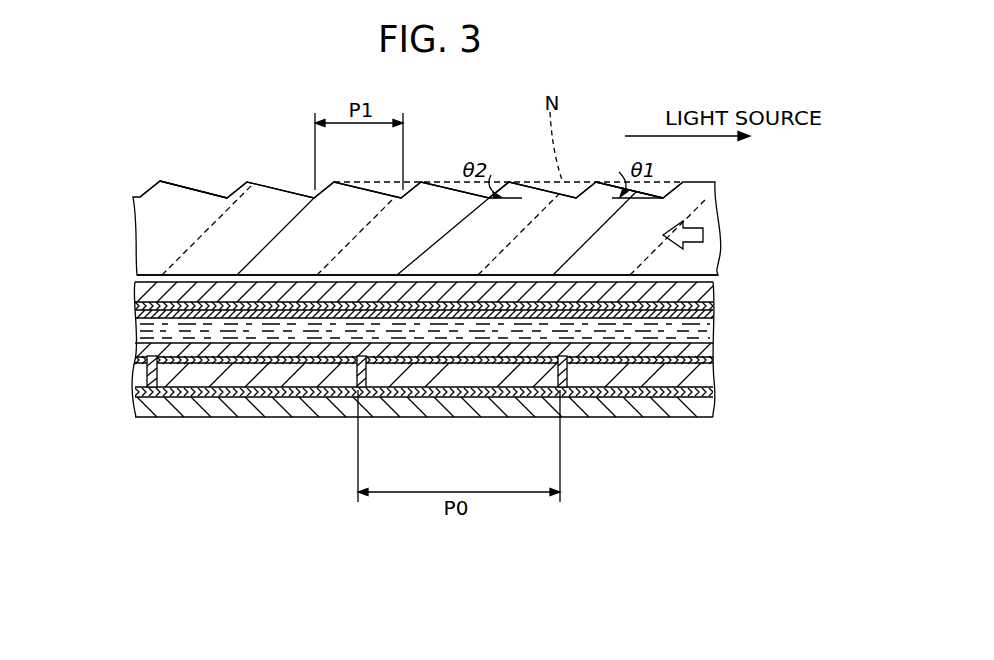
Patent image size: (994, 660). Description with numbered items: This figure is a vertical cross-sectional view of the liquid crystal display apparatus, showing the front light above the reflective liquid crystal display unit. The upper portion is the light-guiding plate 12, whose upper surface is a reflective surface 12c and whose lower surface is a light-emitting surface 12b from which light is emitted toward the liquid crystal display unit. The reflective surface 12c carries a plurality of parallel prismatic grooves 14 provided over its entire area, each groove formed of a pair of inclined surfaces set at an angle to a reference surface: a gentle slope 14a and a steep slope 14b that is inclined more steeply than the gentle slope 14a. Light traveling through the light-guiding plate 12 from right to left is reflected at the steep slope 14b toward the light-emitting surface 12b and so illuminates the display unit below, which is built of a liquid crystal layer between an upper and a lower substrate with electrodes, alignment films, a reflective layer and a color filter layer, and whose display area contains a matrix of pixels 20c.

The light-guiding plate 12 is at (705, 196).
The light-emitting surface 12b is at (153, 277).
The reflective surface 12c is at (192, 188).
The prismatic grooves 14 is at (300, 190).
The gentle slope 14a is at (626, 178).
The steep slope 14b is at (505, 184).
The pixels 20c is at (558, 422).